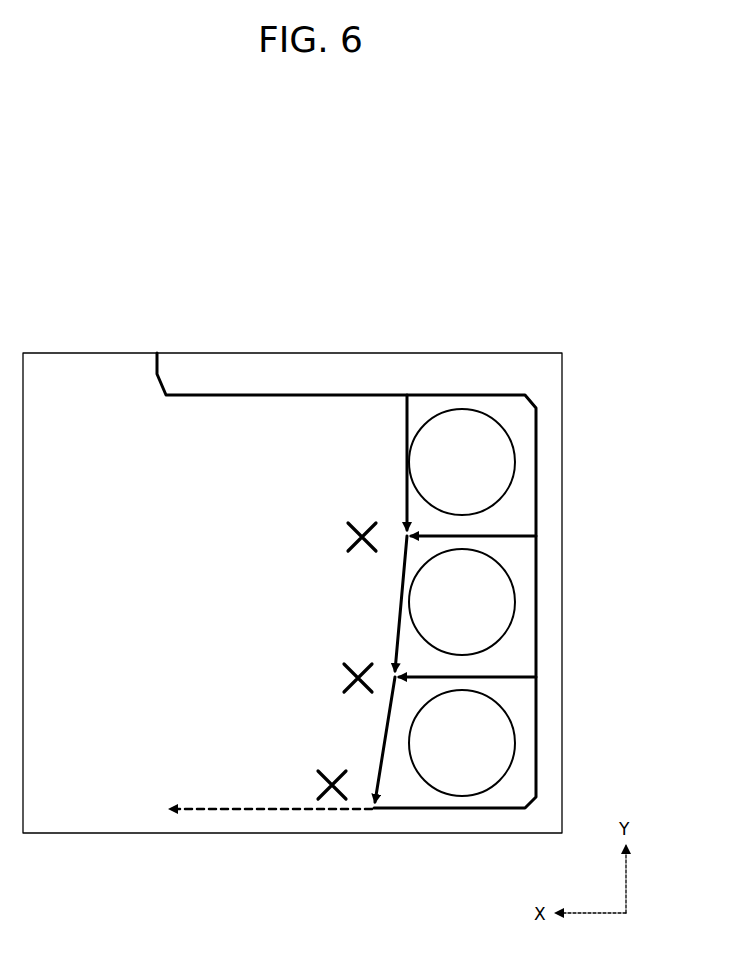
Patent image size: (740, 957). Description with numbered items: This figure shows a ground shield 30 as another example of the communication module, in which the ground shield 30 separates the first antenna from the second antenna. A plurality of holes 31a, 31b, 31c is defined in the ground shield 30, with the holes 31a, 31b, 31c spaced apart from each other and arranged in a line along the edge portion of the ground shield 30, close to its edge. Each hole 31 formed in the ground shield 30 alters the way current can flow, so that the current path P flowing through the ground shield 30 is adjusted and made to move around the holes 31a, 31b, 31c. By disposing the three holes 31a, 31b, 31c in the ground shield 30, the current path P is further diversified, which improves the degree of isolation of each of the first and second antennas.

The ground shield 30 is at (150, 617).
The current path P is at (360, 395).
The hole 31 is at (545, 602).
The hole 31a is at (515, 445).
The hole 31b is at (515, 588).
The hole 31c is at (515, 727).